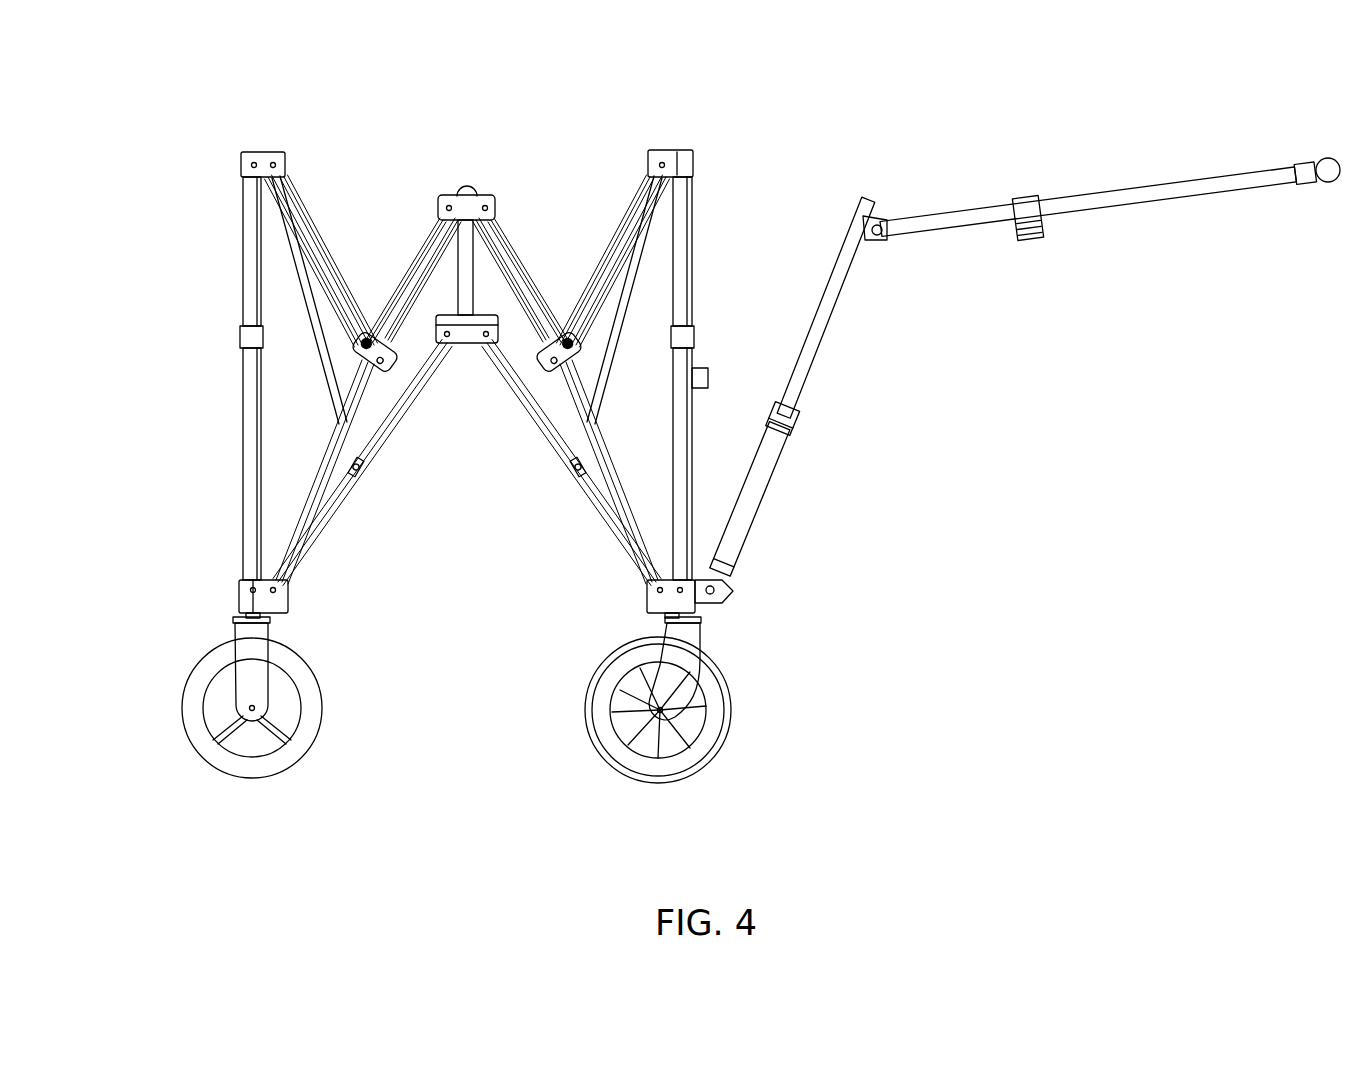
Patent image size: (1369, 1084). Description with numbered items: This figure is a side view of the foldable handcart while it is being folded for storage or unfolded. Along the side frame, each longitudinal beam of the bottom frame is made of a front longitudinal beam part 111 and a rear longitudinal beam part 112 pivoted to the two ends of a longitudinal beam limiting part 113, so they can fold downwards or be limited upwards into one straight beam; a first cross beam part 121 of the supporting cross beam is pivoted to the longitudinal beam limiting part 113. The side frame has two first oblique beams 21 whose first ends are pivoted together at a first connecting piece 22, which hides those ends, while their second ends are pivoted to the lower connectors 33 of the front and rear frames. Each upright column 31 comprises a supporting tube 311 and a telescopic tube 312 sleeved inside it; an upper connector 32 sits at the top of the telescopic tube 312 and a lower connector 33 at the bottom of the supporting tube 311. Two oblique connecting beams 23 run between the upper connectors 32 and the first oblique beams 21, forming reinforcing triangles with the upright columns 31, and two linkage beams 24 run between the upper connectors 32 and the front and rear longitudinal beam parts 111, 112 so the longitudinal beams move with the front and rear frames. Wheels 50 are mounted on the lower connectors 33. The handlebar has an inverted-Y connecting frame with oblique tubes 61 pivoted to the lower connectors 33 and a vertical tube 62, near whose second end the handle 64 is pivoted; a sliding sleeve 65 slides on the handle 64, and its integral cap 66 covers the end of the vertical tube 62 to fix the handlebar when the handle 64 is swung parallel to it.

The first oblique beam 21 is at (333, 457).
The first connecting piece 22 is at (456, 195).
The oblique connecting beam 23 is at (325, 250).
The linkage beam 24 is at (300, 275).
The upright column 31 is at (514, 378).
The upper connector 32 is at (256, 161).
The lower connector 33 is at (252, 591).
The wheel 50 is at (220, 688).
The oblique tube 61 is at (755, 497).
The vertical tube 62 is at (830, 320).
The handle 64 is at (1200, 182).
The sliding sleeve 65 is at (1025, 200).
The cap 66 is at (1037, 223).
The front longitudinal beam part 111 is at (552, 432).
The rear longitudinal beam part 112 is at (343, 498).
The longitudinal beam limiting part 113 is at (466, 343).
The first cross beam part 121 is at (463, 263).
The supporting tube 311 is at (253, 372).
The telescopic tube 312 is at (257, 312).